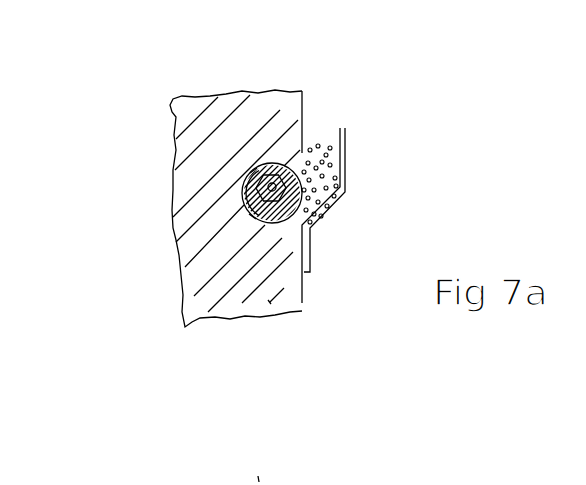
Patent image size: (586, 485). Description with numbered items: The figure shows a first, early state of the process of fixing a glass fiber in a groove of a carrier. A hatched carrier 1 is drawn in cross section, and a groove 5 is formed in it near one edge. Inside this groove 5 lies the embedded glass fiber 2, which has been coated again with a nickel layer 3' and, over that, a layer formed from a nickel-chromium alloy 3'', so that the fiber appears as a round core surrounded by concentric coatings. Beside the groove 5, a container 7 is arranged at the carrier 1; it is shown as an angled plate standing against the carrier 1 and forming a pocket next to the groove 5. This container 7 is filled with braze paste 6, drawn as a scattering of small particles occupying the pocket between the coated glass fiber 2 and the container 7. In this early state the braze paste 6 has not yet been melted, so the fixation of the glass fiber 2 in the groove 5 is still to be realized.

The carrier 1 is at (230, 107).
The glass fiber 2 is at (268, 189).
The nickel layer 3' is at (184, 238).
The layer of a nickel-chromium alloy 3'' is at (182, 185).
The groove 5 is at (303, 162).
The braze paste 6 is at (325, 150).
The container 7 is at (347, 186).